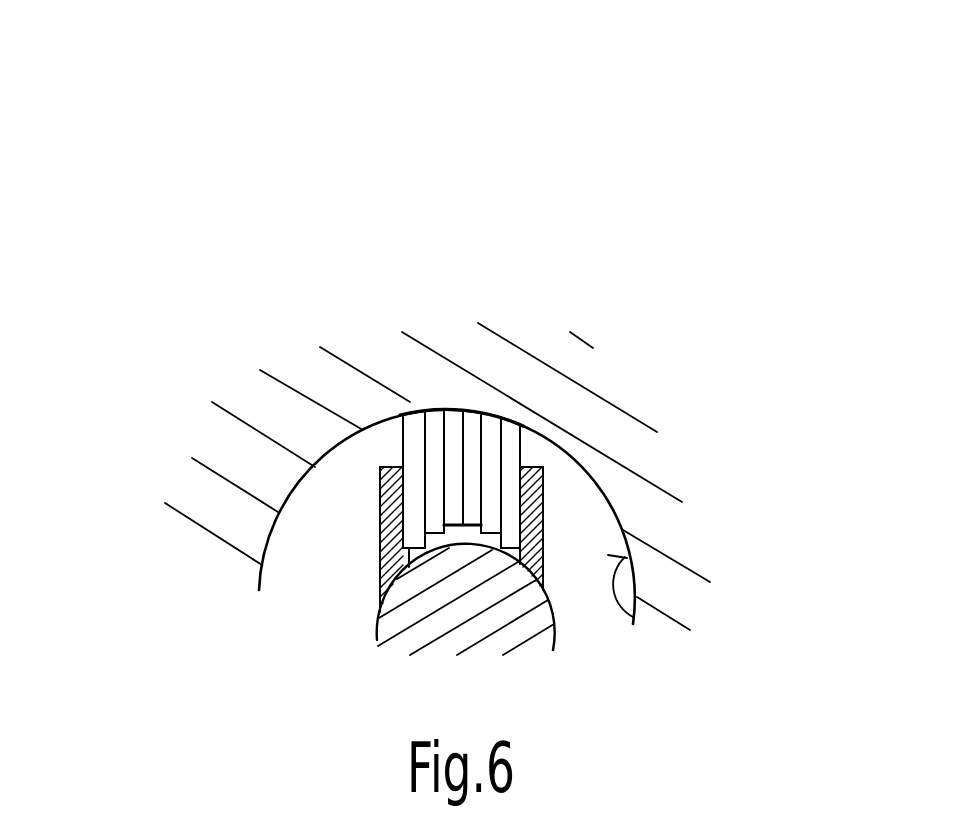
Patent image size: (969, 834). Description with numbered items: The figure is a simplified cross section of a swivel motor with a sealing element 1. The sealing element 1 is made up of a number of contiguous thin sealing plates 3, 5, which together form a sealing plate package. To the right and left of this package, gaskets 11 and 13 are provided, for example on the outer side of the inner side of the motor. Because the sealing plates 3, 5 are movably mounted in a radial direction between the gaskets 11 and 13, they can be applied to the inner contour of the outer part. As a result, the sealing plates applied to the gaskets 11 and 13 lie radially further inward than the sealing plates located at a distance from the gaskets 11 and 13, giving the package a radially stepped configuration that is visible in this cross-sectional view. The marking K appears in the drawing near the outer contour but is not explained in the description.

The sealing element 1 is at (562, 284).
The sealing plate 3 is at (390, 421).
The sealing plate 5 is at (431, 418).
The gasket 11 is at (541, 517).
The gasket 13 is at (373, 527).
The ball contour K is at (633, 620).